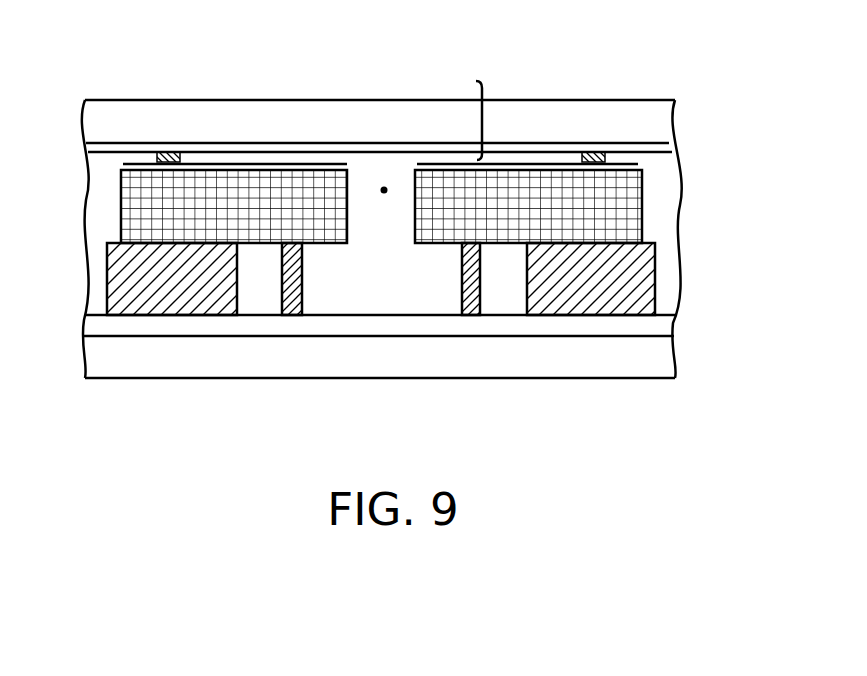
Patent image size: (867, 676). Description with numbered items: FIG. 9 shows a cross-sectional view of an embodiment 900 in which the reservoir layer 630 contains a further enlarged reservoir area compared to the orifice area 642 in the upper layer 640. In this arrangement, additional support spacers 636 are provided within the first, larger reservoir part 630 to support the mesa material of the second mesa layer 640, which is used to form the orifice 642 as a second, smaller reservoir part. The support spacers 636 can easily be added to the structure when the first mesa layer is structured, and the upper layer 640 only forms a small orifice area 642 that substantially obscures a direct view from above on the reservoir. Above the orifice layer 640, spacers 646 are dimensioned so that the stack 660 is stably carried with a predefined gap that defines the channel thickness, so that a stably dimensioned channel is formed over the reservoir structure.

The embodiment 900 is at (690, 422).
The reservoir layer 630 is at (660, 278).
The support spacers 636 is at (297, 270).
The second mesa layer 640 is at (660, 203).
The orifice 642 is at (384, 188).
The spacers 646 is at (591, 152).
The stack 660 is at (482, 115).